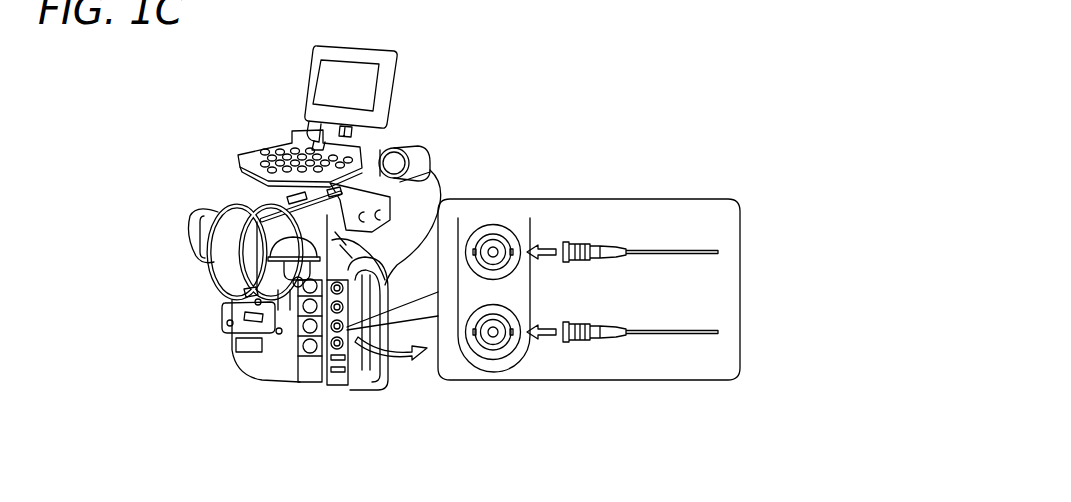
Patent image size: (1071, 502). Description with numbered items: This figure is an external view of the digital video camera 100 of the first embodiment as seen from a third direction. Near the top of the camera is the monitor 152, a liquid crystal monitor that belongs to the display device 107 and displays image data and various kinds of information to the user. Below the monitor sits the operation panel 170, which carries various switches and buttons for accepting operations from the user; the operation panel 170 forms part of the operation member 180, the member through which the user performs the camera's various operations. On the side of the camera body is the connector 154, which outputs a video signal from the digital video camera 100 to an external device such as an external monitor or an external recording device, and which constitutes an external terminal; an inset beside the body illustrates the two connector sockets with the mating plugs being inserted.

The digital video camera 100 is at (612, 147).
The monitor 152 is at (298, 96).
The display device 107 is at (318, 68).
The operation panel 170 is at (254, 138).
The operation member 180 is at (277, 147).
The connector 154 is at (367, 303).